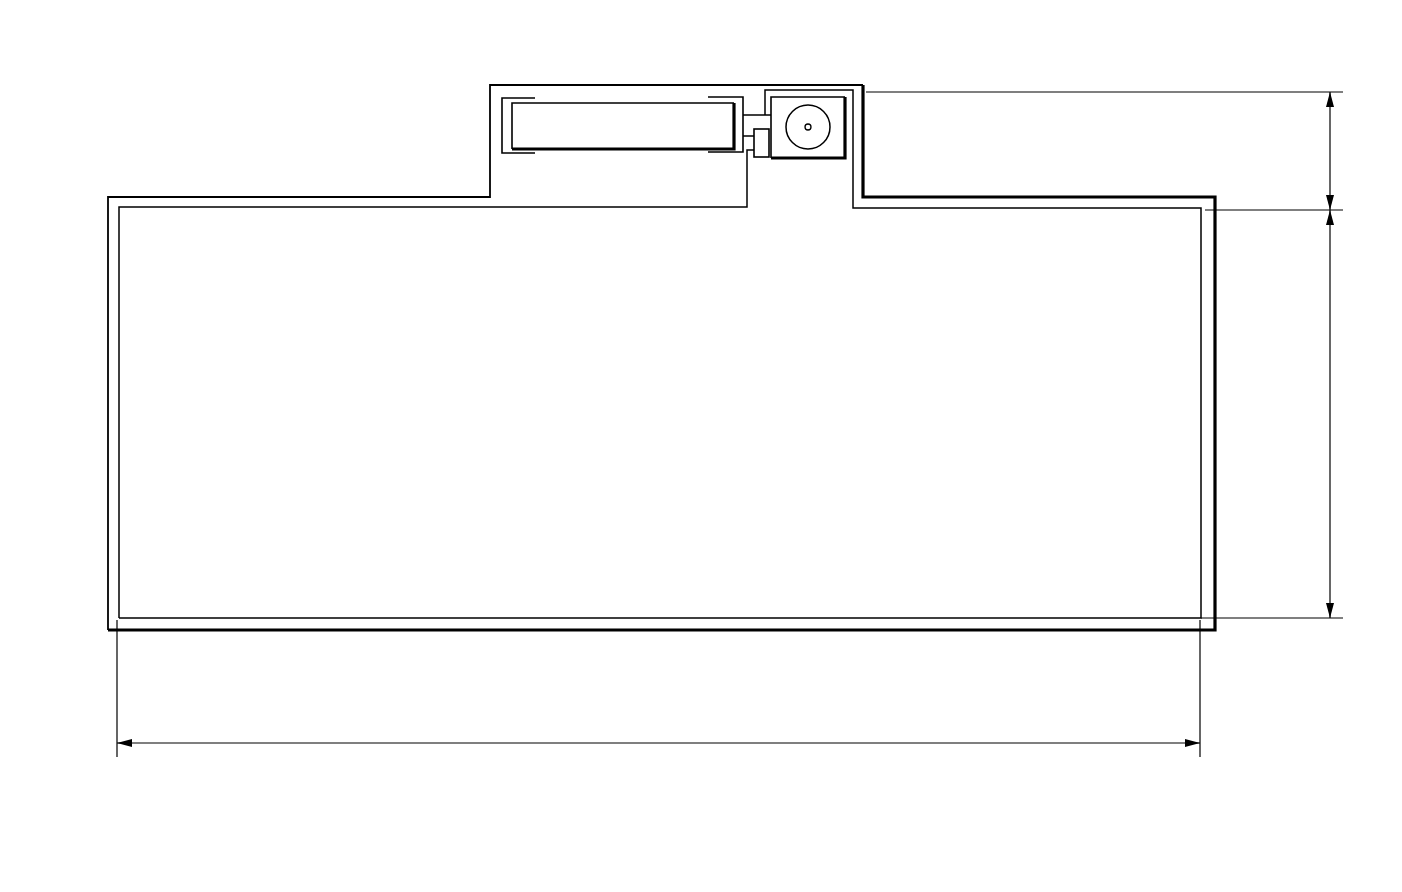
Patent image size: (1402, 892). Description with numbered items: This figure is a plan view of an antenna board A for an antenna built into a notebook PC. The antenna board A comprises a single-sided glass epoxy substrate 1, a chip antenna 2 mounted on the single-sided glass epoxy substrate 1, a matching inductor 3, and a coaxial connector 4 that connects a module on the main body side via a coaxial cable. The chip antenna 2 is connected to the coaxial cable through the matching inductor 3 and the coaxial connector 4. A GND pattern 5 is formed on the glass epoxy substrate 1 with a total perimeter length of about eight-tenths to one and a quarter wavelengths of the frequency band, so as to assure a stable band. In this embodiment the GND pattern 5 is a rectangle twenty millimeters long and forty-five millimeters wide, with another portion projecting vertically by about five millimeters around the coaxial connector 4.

The antenna board A is at (252, 130).
The single-sided glass epoxy substrate 1 is at (1005, 198).
The chip antenna 2 is at (622, 105).
The matching inductor 3 is at (763, 127).
The coaxial connector 4 is at (840, 128).
The GND pattern 5 is at (1093, 208).